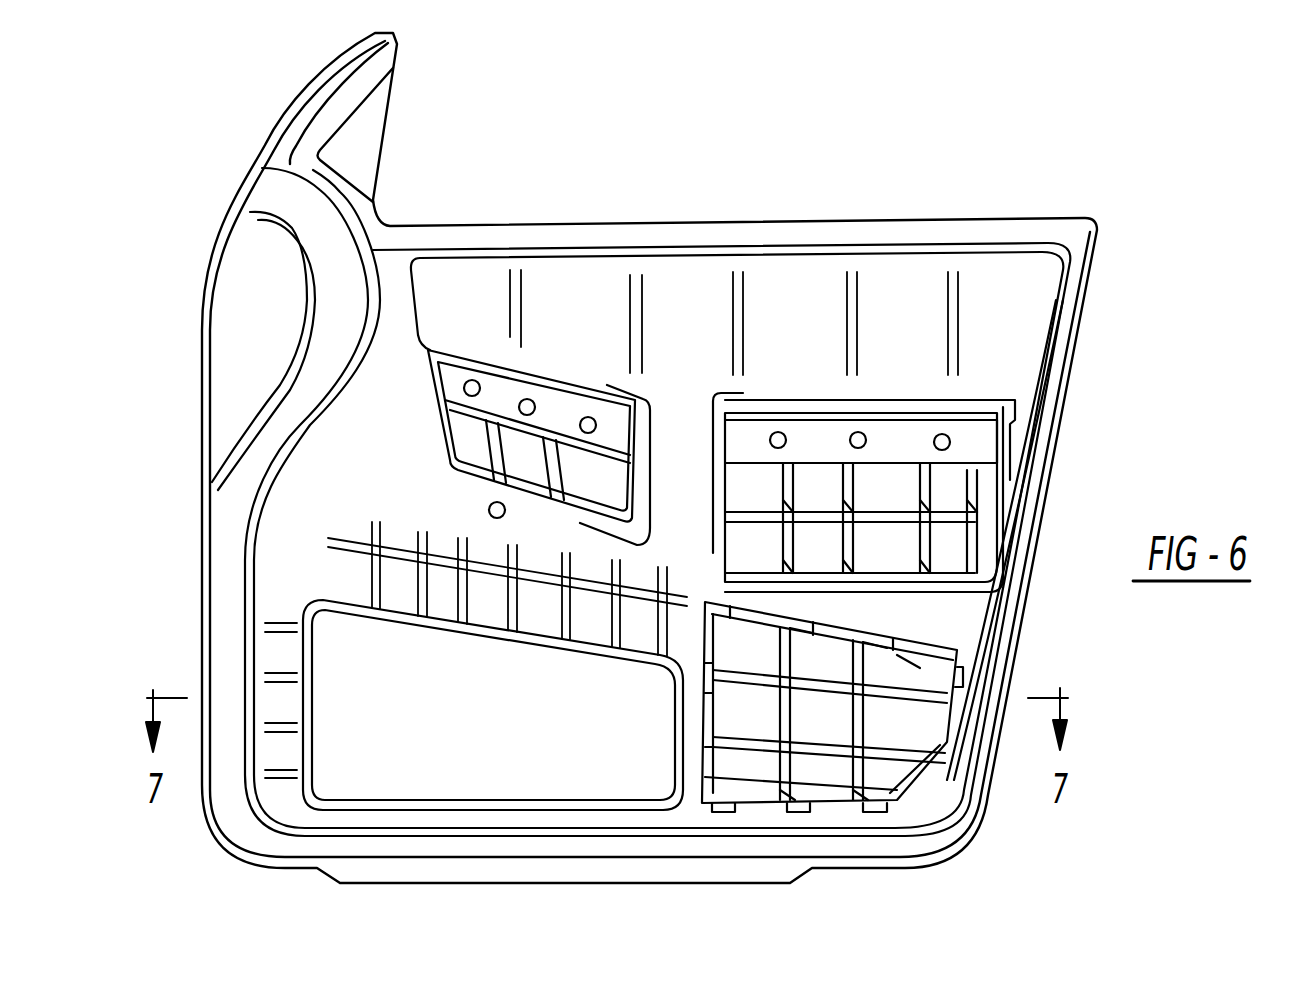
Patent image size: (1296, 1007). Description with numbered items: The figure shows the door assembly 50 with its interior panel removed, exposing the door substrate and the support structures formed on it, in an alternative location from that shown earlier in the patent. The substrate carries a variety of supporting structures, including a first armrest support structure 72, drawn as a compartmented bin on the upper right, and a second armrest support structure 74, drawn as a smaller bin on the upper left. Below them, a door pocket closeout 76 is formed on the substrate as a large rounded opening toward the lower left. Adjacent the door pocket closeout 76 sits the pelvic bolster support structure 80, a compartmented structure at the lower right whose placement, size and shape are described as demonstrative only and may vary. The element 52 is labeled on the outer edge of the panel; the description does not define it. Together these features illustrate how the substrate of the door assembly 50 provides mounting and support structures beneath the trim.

The door assembly 50 is at (150, 594).
The trim panel substrate 52 is at (1068, 258).
The first armrest support structure 72 is at (953, 518).
The second armrest support structure 74 is at (445, 436).
The door pocket closeout 76 is at (467, 727).
The pelvic bolster support structure 80 is at (878, 772).